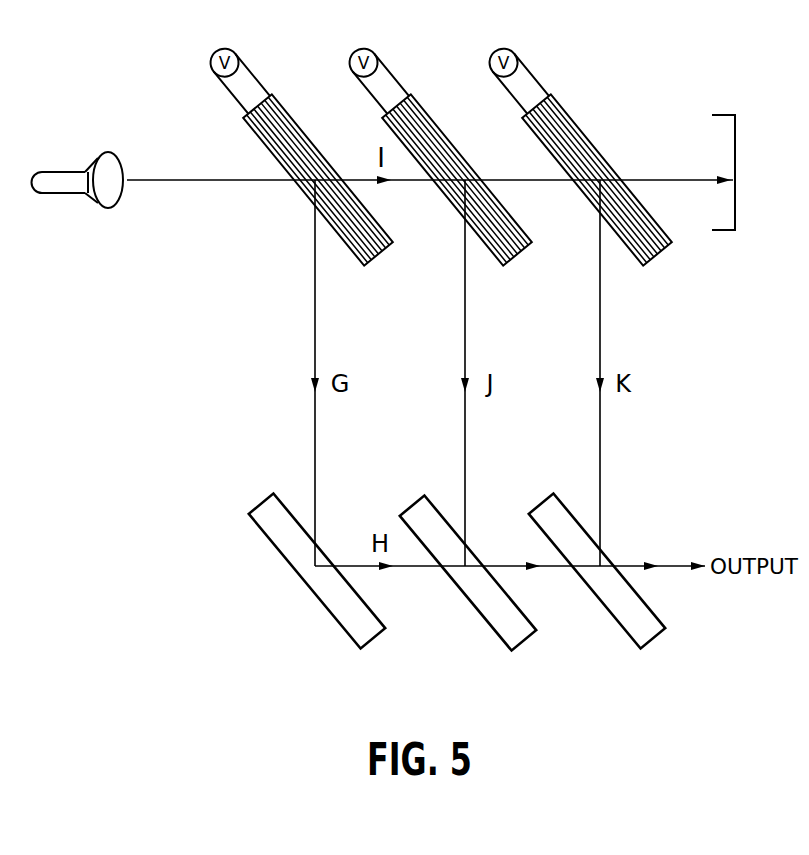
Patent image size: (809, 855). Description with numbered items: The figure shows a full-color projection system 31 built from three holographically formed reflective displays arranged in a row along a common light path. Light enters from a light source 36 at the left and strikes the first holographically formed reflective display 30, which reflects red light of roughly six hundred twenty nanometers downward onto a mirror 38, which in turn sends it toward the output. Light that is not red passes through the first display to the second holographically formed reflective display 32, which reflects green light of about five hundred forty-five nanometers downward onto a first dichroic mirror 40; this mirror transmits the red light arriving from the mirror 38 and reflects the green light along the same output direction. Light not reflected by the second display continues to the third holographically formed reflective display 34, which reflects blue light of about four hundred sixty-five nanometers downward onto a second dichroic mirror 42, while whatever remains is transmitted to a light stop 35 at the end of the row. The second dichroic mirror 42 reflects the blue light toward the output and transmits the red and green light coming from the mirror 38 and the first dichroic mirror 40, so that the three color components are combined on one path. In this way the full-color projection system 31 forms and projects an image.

The first holographically formed reflective display 30 is at (247, 131).
The full-color projection system 31 is at (429, 153).
The second holographically formed reflective display 32 is at (425, 121).
The third holographically formed reflective display 34 is at (573, 119).
The light stop 35 is at (735, 147).
The light source 36 is at (72, 172).
The mirror 38 is at (328, 612).
The first dichroic mirror 40 is at (482, 613).
The second dichroic mirror 42 is at (617, 615).